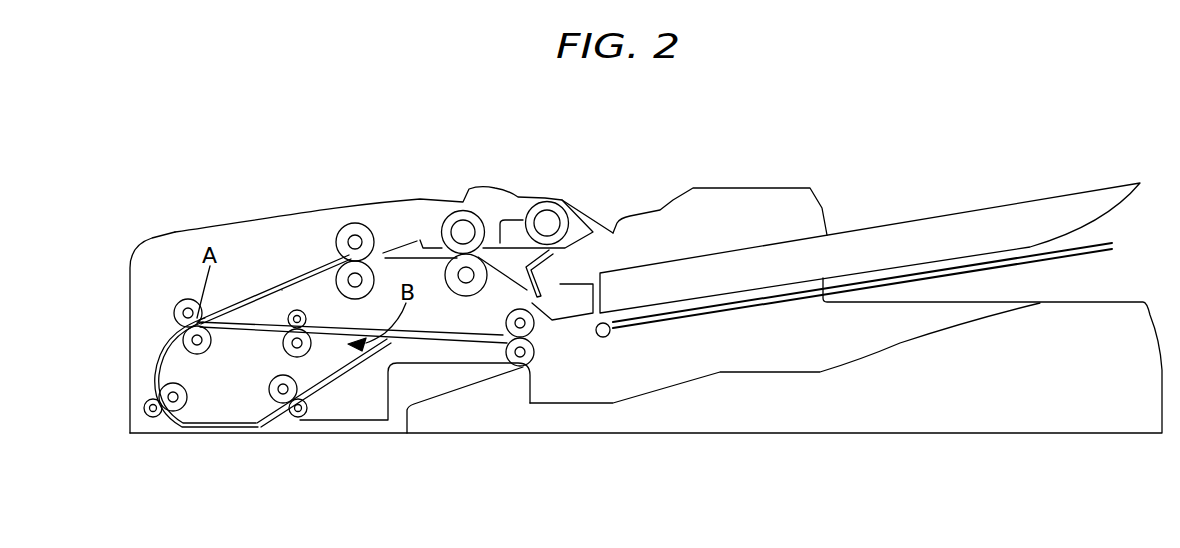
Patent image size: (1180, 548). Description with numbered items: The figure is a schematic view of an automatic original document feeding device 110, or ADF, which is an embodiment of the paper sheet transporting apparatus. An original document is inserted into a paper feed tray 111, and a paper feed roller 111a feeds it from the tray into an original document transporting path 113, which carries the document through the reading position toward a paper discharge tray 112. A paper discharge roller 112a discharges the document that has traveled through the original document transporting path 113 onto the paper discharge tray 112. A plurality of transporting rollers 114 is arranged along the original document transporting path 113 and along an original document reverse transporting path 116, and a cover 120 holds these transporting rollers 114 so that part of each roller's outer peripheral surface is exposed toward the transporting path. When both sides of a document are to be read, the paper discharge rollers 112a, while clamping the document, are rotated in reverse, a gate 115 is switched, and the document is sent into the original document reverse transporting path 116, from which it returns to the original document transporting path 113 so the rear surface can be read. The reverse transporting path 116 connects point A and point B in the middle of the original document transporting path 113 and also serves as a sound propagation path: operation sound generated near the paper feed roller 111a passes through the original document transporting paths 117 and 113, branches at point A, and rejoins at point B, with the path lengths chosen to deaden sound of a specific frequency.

The automatic original document feeding device 110 is at (698, 152).
The paper feed tray 111 is at (880, 228).
The paper feed roller 111a is at (548, 202).
The paper discharge tray 112 is at (753, 370).
The paper discharge roller 112a is at (537, 360).
The original document transporting path 113 is at (160, 343).
The transporting rollers 114 is at (185, 298).
The gate 115 is at (360, 352).
The original document reverse transporting path 116 is at (246, 300).
The original document transporting path 117 is at (282, 290).
The cover 120 is at (411, 203).